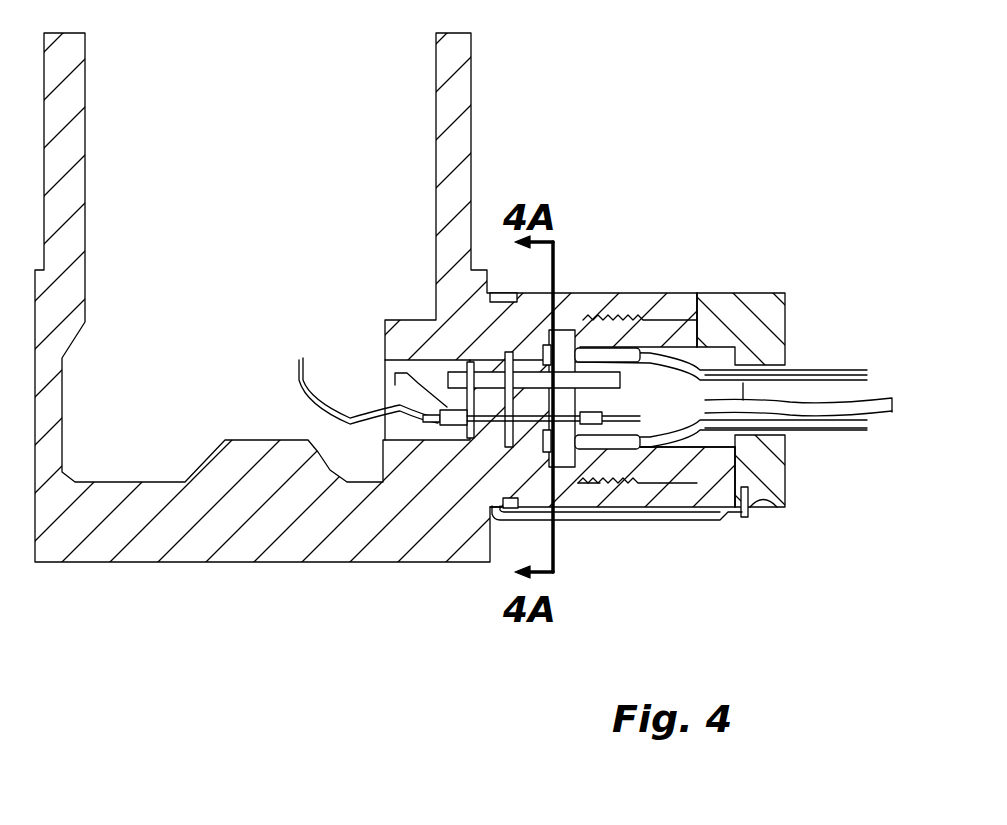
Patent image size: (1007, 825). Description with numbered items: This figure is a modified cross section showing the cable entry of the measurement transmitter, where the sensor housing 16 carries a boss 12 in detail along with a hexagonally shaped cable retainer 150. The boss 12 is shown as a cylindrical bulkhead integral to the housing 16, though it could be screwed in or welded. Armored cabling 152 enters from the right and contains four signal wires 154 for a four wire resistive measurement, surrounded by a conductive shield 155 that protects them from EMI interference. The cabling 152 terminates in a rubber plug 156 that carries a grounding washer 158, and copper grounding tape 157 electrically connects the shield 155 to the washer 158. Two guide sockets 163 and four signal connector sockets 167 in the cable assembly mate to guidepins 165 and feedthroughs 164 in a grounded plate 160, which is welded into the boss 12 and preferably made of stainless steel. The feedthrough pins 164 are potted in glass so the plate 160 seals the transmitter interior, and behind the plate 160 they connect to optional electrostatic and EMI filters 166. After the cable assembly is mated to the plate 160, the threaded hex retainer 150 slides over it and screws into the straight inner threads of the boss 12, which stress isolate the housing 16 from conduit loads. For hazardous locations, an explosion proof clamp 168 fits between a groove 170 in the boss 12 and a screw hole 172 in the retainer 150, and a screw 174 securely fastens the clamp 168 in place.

The boss 12 is at (642, 302).
The sensor housing 16 is at (56, 287).
The cable retainer 150 is at (760, 348).
The armored cabling 152 is at (805, 425).
The signal wires 154 is at (882, 405).
The conductive shield 155 is at (848, 420).
The rubber plug 156 is at (660, 353).
The copper grounding tape 157 is at (707, 350).
The grounding washer 158 is at (563, 330).
The grounded plate 160 is at (387, 448).
The guide sockets 163 is at (653, 517).
The feedthrough pins 164 is at (498, 503).
The guidepins 165 is at (493, 380).
The electrostatic and EMI filters 166 is at (397, 383).
The signal connector sockets 167 is at (597, 500).
The explosion proof clamp 168 is at (707, 517).
The groove 170 is at (503, 300).
The screw hole 172 is at (762, 505).
The screw 174 is at (745, 520).